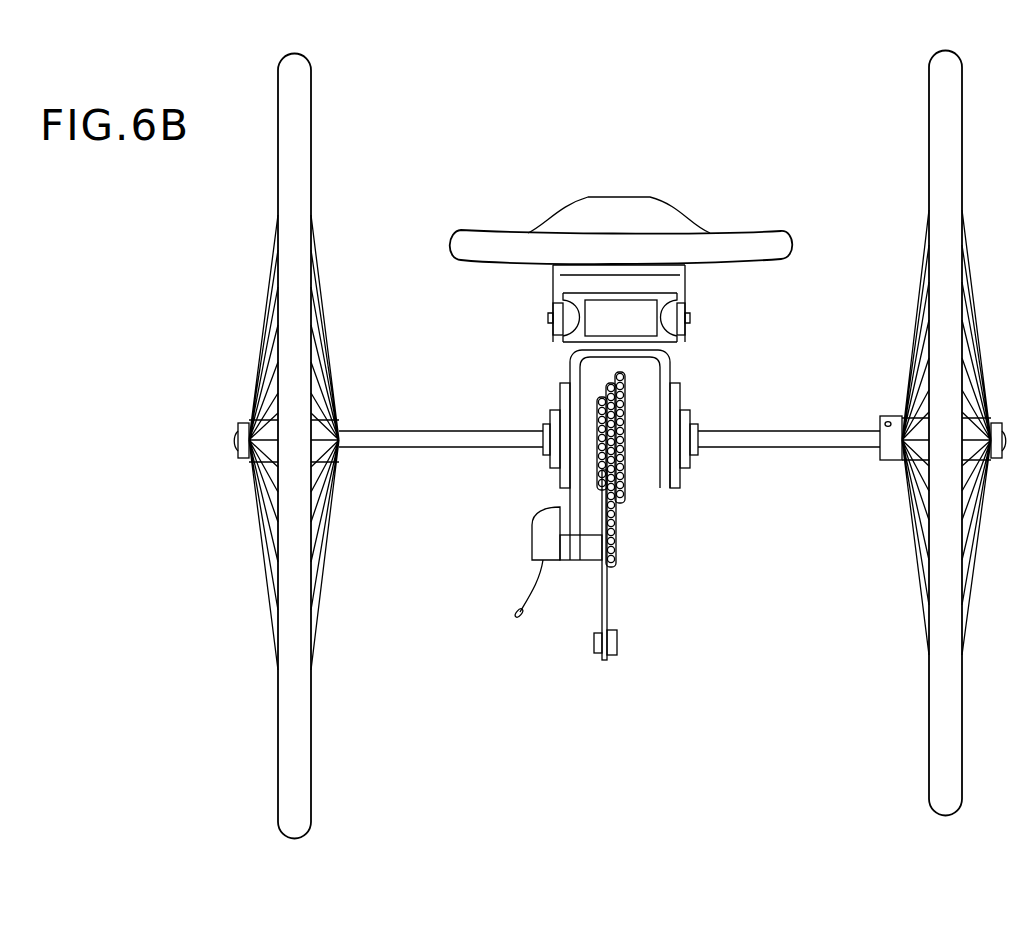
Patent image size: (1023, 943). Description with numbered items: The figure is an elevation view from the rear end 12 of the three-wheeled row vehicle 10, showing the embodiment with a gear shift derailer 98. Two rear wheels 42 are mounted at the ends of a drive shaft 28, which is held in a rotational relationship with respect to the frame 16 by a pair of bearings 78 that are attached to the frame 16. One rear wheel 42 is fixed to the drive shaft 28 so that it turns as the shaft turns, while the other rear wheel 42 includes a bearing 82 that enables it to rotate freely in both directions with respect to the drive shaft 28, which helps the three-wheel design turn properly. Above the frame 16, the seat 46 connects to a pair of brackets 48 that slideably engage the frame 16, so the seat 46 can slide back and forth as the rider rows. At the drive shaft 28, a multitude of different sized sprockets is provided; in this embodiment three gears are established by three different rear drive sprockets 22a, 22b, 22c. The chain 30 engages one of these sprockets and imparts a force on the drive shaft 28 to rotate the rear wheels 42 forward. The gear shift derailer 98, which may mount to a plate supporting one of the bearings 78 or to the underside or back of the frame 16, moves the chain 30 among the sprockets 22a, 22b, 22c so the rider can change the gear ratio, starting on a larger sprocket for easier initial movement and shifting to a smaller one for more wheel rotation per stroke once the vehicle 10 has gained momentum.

The row vehicle 10 is at (745, 140).
The rear end 12 is at (688, 614).
The frame 16 is at (688, 358).
The rear drive sprocket 22a is at (600, 396).
The rear drive sprocket 22b is at (611, 382).
The rear drive sprocket 22c is at (620, 371).
The drive shaft 28 is at (436, 448).
The chain 30 is at (628, 512).
The rear wheel 42 is at (312, 757).
The seat 46 is at (619, 197).
The bracket 48 is at (553, 298).
The bearing 78 is at (550, 404).
The bearing 82 is at (880, 416).
The gear shift derailer 98 is at (535, 550).